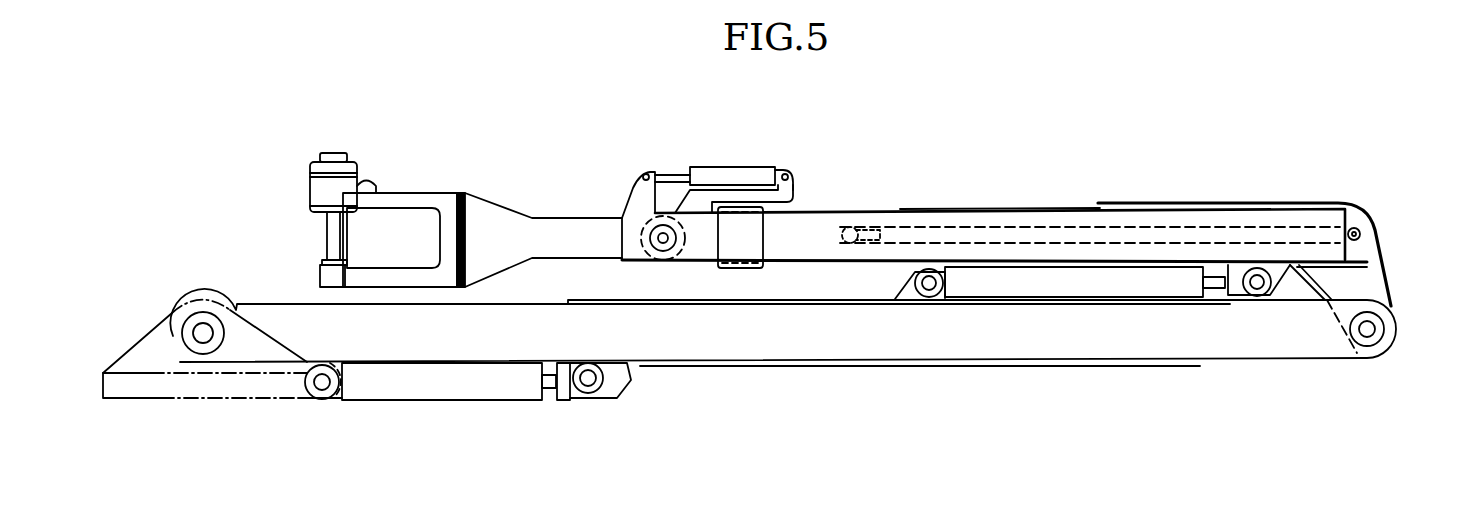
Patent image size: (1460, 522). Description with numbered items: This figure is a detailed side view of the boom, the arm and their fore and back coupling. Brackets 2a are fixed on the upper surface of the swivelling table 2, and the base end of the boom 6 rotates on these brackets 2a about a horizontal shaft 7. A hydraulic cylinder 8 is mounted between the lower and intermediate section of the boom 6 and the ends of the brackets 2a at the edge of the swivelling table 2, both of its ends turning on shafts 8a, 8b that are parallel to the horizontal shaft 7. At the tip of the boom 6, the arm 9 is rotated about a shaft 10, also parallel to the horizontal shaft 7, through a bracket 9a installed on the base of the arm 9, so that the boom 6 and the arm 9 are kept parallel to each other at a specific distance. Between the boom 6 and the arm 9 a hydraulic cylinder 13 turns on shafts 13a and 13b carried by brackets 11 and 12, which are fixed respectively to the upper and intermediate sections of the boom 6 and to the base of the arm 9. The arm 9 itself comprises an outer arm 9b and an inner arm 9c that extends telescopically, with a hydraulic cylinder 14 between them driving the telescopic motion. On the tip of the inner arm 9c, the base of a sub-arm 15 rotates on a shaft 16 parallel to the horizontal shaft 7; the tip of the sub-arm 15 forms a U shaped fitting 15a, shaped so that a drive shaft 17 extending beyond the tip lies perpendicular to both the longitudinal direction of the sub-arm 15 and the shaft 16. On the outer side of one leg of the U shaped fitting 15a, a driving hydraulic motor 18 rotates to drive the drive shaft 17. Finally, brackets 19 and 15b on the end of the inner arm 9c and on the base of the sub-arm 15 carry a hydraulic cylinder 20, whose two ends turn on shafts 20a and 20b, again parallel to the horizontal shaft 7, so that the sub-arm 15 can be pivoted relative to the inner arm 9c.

The swivelling table 2 is at (216, 398).
The brackets 2a is at (145, 333).
The boom 6 is at (768, 362).
The horizontal shaft 7 is at (208, 333).
The hydraulic cylinder 8 is at (468, 401).
The shaft 8a is at (588, 386).
The shaft 8b is at (322, 399).
The arm 9 is at (1191, 202).
The bracket 9a is at (1373, 292).
The outer arm 9b is at (1018, 208).
The inner arm 9c is at (712, 262).
The shaft 10 is at (1367, 346).
The bracket 11 is at (905, 292).
The bracket 12 is at (1273, 295).
The hydraulic cylinder 13 is at (1055, 297).
The shaft 13a is at (931, 297).
The shaft 13b is at (1248, 295).
The hydraulic cylinder 14 is at (1076, 222).
The sub-arm 15 is at (522, 206).
The U shaped fitting 15a is at (432, 193).
The bracket 15b is at (622, 200).
The shaft 16 is at (663, 245).
The drive shaft 17 is at (327, 255).
The driving hydraulic motor 18 is at (308, 168).
The bracket 19 is at (796, 188).
The hydraulic cylinder 20 is at (746, 167).
The shaft 20a is at (650, 176).
The shaft 20b is at (790, 175).